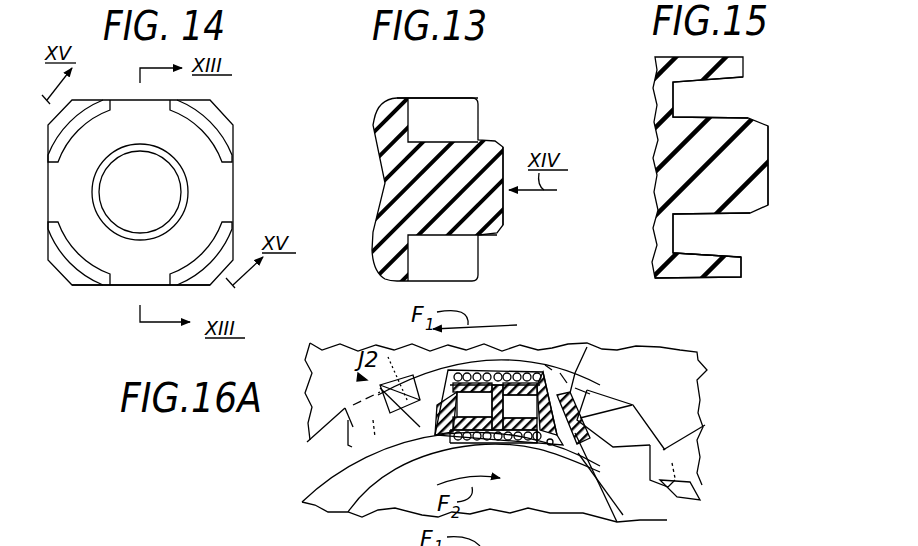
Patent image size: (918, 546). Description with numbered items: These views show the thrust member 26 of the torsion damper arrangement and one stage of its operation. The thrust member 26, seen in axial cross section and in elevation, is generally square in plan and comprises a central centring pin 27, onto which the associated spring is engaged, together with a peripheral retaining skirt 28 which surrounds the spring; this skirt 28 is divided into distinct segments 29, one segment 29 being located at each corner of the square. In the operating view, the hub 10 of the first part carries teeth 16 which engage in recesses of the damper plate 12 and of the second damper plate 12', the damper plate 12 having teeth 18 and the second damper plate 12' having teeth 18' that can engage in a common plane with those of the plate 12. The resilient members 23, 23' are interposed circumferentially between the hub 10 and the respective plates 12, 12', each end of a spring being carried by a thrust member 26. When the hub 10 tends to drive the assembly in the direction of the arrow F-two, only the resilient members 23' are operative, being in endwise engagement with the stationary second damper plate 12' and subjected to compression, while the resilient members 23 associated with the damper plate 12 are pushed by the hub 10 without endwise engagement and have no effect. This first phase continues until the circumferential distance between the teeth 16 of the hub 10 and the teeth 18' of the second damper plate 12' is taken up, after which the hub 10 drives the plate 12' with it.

In FIG. 16A, the hub 10 is at (319, 469).
In FIG. 16A, the damper plate 12 is at (624, 468).
In FIG. 16A, the second damper plate 12' is at (506, 414).
In FIG. 16A, the teeth 16 is at (353, 428).
In FIG. 16A, the teeth 18 is at (558, 422).
In FIG. 16A, the teeth 18' is at (547, 411).
In FIG. 16A, the resilient member 23 is at (548, 466).
In FIG. 16A, the resilient member 23' is at (497, 460).
In FIG. 14, the thrust member 26 is at (52, 275).
In FIG. 13, the thrust member 26 is at (371, 112).
In FIG. 15, the thrust member 26 is at (651, 219).
In FIG. 16A, the thrust member 26 is at (440, 368).
In FIG. 14, the central centring pin 27 is at (158, 196).
In FIG. 13, the central centring pin 27 is at (490, 212).
In FIG. 15, the central centring pin 27 is at (758, 143).
In FIG. 14, the peripheral retaining skirt 28 is at (117, 289).
In FIG. 13, the peripheral retaining skirt 28 is at (439, 96).
In FIG. 15, the peripheral retaining skirt 28 is at (729, 282).
In FIG. 14, the segments 29 is at (77, 116).
In FIG. 13, the segments 29 is at (472, 113).
In FIG. 15, the segments 29 is at (731, 68).